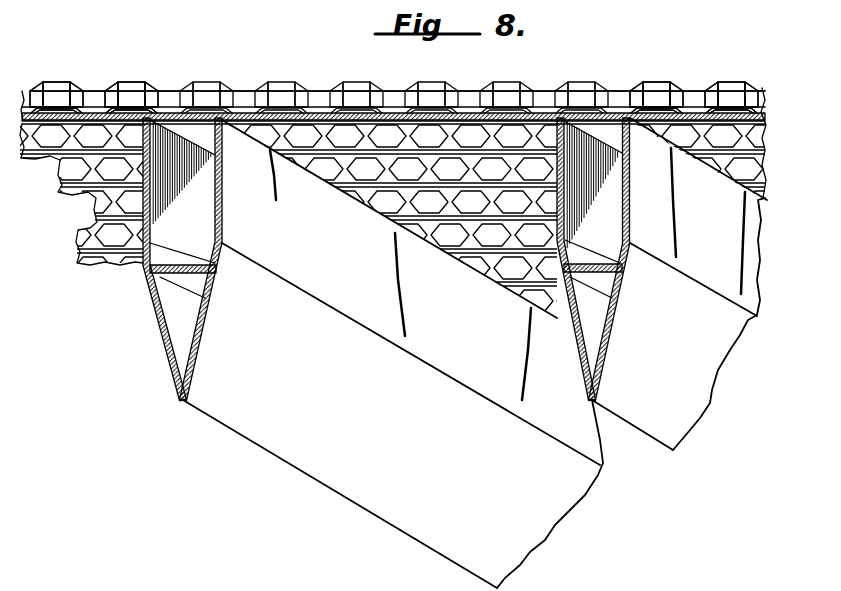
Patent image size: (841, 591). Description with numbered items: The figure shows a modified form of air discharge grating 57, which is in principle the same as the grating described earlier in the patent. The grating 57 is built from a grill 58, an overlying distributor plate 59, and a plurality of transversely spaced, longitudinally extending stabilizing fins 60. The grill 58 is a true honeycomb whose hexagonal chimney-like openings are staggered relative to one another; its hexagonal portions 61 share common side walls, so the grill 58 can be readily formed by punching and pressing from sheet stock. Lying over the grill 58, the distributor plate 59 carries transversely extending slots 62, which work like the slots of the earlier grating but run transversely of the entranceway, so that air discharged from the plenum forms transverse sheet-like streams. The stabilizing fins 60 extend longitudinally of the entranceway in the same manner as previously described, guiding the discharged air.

The air discharge grating 57 is at (609, 77).
The grill 58 is at (350, 81).
The distributor plate 59 is at (393, 98).
The stabilizing fins 60 is at (169, 340).
The hexagonal portions 61 is at (116, 82).
The transversely extending slots 62 is at (502, 147).